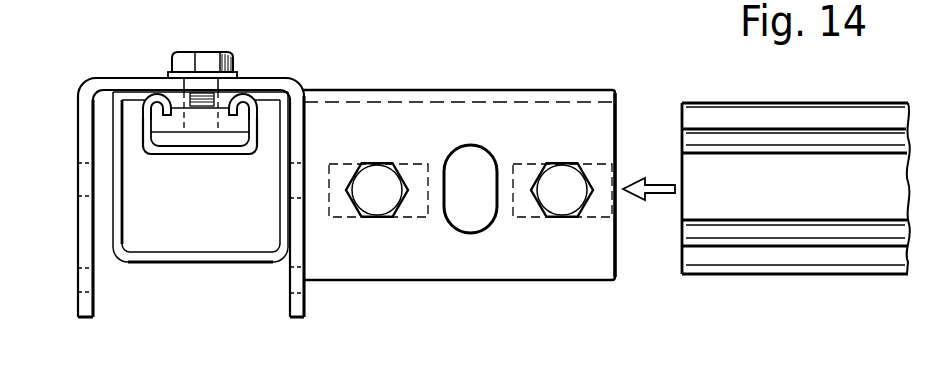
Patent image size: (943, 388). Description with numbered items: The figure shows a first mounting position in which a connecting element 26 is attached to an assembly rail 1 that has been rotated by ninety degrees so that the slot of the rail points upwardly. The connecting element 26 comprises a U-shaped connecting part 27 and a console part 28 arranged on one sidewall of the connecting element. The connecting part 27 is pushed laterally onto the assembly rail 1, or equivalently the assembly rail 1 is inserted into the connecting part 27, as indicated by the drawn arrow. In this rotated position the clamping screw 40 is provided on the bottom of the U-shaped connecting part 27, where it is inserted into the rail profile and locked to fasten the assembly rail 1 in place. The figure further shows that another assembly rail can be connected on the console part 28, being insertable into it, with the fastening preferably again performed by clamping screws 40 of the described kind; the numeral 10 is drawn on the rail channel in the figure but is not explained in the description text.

The assembly rail 1 is at (233, 261).
The channel rail 10 is at (156, 263).
The connecting element 26 is at (294, 77).
The connecting part 27 is at (94, 87).
The console part 28 is at (452, 113).
The clamping screw 40 is at (178, 53).